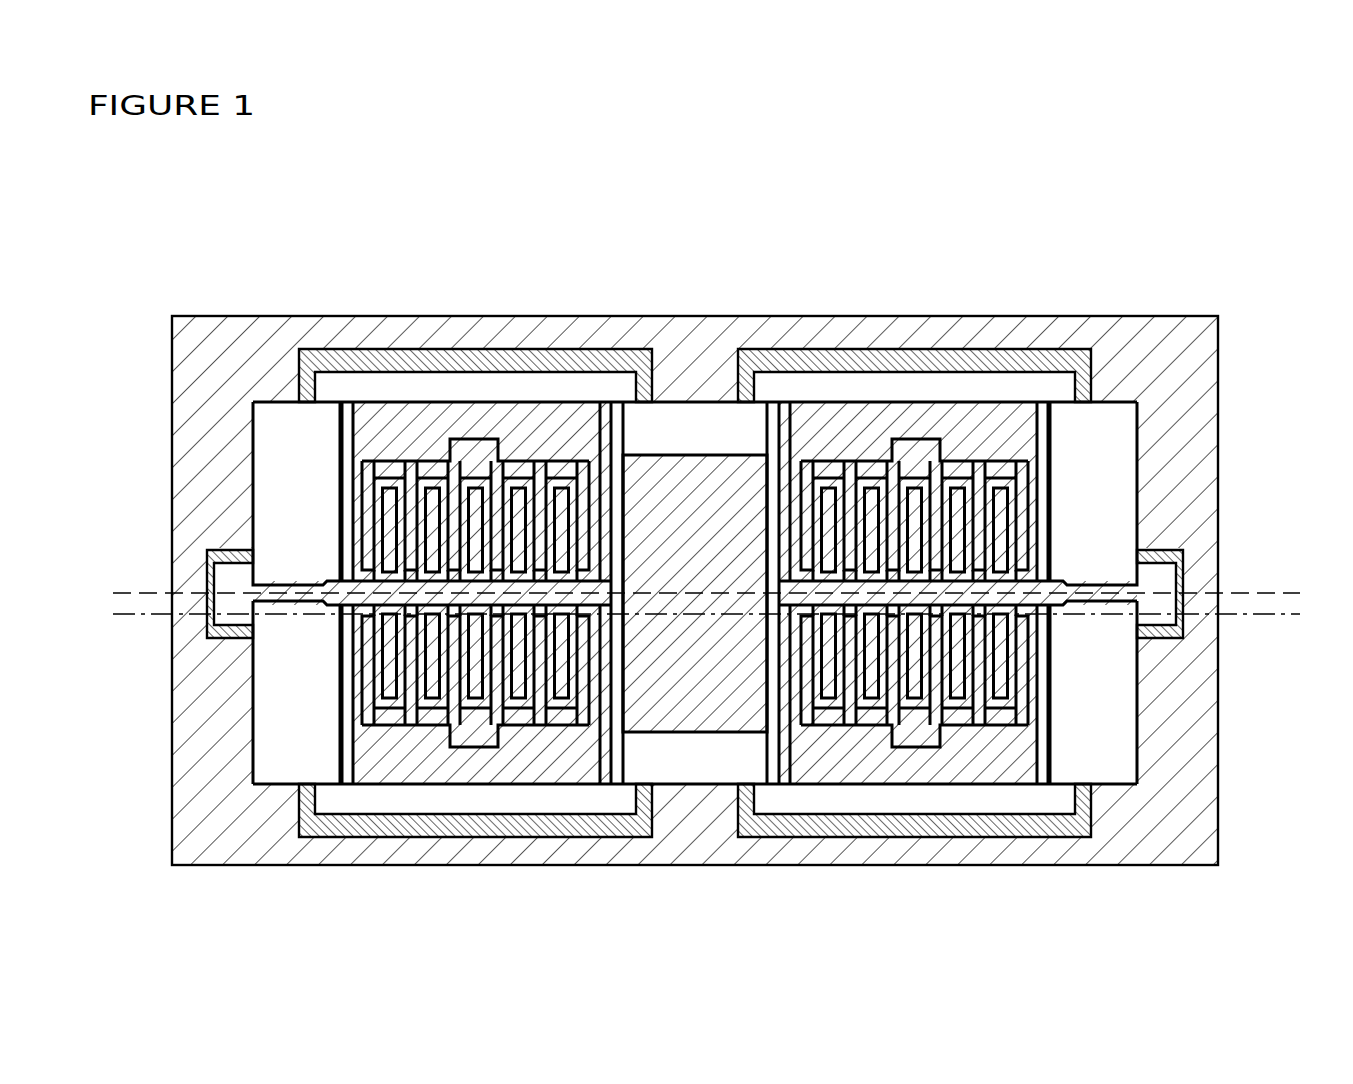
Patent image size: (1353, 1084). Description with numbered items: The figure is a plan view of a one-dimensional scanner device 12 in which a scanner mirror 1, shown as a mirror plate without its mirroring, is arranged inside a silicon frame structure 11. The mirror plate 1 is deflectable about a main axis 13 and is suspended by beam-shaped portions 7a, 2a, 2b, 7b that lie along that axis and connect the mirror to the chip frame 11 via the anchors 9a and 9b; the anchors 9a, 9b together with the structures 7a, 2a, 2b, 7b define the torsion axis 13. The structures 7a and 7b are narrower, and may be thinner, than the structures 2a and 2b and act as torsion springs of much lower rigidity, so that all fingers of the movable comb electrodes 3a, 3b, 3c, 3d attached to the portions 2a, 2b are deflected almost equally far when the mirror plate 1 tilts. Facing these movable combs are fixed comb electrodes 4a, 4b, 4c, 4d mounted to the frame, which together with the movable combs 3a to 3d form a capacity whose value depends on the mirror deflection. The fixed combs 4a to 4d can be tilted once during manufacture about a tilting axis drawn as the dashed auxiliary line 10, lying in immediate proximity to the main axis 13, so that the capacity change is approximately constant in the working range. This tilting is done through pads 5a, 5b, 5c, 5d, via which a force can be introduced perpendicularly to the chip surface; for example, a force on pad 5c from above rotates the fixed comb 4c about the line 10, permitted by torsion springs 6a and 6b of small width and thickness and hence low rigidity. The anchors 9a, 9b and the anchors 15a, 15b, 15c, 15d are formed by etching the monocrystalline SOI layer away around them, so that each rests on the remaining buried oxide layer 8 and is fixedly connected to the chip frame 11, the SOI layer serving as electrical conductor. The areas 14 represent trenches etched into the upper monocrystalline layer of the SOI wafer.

The scanner mirror 1 is at (712, 475).
The beam-shaped portion 2a is at (620, 580).
The beam-shaped portion 2b is at (773, 580).
The movable comb electrode 3a is at (562, 490).
The movable comb electrode 3b is at (872, 492).
The movable comb electrode 3c is at (566, 700).
The movable comb electrode 3d is at (812, 700).
The fixed comb electrode 4a is at (500, 495).
The fixed comb electrode 4b is at (940, 490).
The fixed comb electrode 4c is at (540, 690).
The fixed comb electrode 4d is at (860, 690).
The pad 5a is at (482, 455).
The pad 5b is at (920, 440).
The pad 5c is at (465, 755).
The pad 5d is at (915, 755).
The torsion spring 6a is at (348, 620).
The torsion spring 6b is at (600, 620).
The torsion spring 7a is at (302, 580).
The torsion spring 7b is at (1103, 600).
The buried oxide layer 8 is at (312, 350).
The anchor 9a is at (208, 573).
The anchor 9b is at (1182, 580).
The auxiliary line 10 is at (1253, 625).
The frame structure 11 is at (1160, 345).
The scanner device 12 is at (1243, 272).
The main axis 13 is at (1300, 622).
The areas 14 is at (1113, 480).
The anchor 15a is at (362, 385).
The anchor 15b is at (990, 385).
The anchor 15c is at (505, 805).
The anchor 15d is at (787, 805).